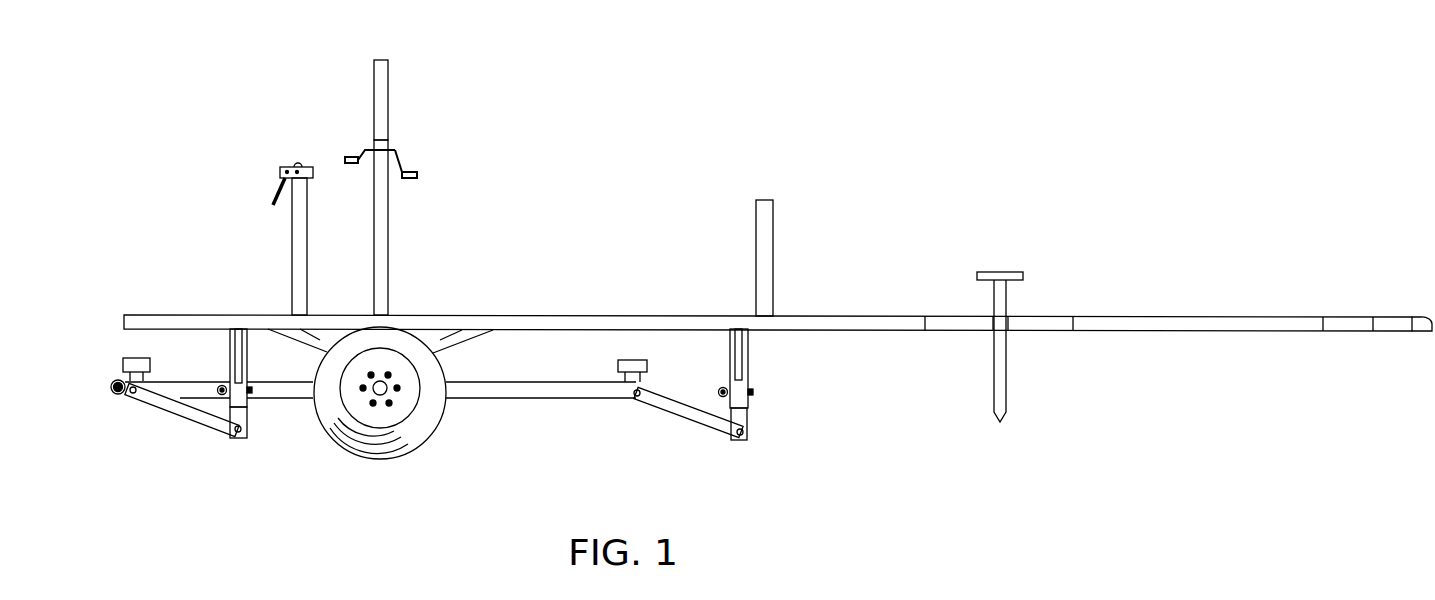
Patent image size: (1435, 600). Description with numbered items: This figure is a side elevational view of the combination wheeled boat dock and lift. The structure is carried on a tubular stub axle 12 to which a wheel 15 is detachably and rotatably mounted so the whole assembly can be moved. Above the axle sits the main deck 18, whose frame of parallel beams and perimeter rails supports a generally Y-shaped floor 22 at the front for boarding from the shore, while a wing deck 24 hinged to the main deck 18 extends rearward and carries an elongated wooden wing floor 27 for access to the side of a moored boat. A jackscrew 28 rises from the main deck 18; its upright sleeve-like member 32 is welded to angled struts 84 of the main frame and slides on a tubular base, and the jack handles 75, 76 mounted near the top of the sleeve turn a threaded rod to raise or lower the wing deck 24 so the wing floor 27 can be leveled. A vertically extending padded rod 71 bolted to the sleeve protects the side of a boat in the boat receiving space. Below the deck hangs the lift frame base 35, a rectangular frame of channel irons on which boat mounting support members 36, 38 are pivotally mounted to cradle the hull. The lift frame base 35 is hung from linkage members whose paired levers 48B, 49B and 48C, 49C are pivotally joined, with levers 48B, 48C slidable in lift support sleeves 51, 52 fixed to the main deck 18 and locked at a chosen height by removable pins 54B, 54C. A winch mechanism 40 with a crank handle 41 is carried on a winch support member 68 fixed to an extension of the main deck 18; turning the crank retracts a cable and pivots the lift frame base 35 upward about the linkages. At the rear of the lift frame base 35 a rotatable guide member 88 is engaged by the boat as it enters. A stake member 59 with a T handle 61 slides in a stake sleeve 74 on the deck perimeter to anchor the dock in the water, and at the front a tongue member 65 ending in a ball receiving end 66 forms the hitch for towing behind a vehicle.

The tubular stub axle 12 is at (390, 396).
The wheel 15 is at (382, 458).
The main deck 18 is at (1190, 323).
The Y-shaped floor 22 is at (1115, 316).
The wing deck 24 is at (577, 315).
The wing floor 27 is at (495, 315).
The jackscrew 28 is at (401, 82).
The sleeve-like member 32 is at (380, 252).
The lift frame base 35 is at (531, 400).
The boat mounting support member 36 is at (123, 360).
The boat mounting support member 38 is at (733, 358).
The winch mechanism 40 is at (306, 167).
The crank handle 41 is at (282, 188).
The lever 48B is at (250, 425).
The lever 48C is at (750, 420).
The lever 49B is at (173, 415).
The lever 49C is at (672, 420).
The lift support sleeve 51 is at (232, 356).
The lift support sleeve 52 is at (750, 367).
The removable pin 54B is at (252, 397).
The removable pin 54C is at (756, 395).
The stake member 59 is at (1063, 408).
The T handle 61 is at (1003, 272).
The tongue member 65 is at (1393, 317).
The ball receiving end 66 is at (1422, 332).
The winch support member 68 is at (292, 267).
The padded rod 71 is at (773, 228).
The stake sleeve 74 is at (996, 327).
The jack handle 75 is at (413, 172).
The jack handle 76 is at (353, 157).
The angled strut 84 is at (247, 362).
The guide member 88 is at (112, 389).